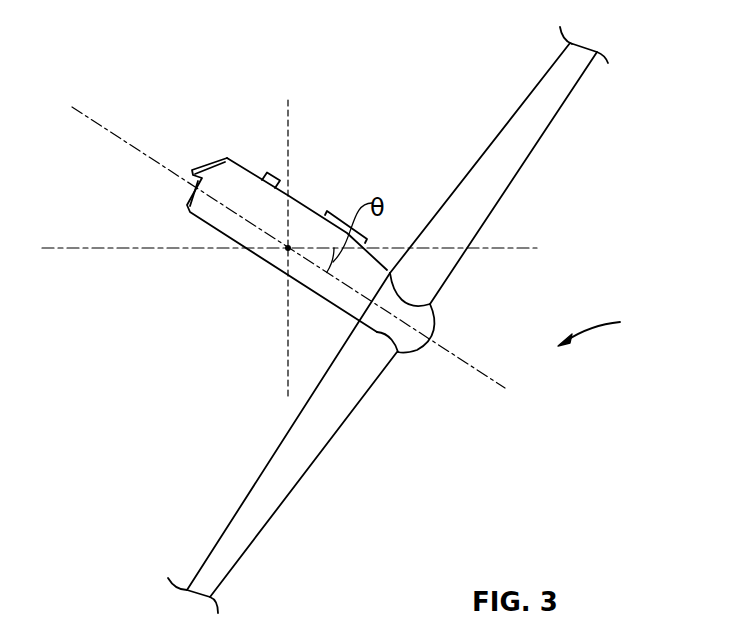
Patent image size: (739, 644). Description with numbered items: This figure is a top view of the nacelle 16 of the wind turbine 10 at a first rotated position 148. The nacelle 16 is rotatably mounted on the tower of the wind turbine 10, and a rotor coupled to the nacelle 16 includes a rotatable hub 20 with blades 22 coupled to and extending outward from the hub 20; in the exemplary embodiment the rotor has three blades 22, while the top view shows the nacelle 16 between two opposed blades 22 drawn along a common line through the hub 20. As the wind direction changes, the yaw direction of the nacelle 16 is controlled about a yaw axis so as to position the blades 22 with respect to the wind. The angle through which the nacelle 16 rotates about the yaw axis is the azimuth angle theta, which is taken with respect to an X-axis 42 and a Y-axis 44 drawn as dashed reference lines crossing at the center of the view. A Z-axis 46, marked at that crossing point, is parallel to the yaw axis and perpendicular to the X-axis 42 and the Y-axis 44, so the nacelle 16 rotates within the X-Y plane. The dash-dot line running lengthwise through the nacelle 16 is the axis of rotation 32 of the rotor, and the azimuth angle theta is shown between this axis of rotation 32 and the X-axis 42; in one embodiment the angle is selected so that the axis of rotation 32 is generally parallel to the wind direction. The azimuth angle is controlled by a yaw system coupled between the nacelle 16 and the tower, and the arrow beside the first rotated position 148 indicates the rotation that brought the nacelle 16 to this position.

The wind turbine 10 is at (333, 320).
The nacelle 16 is at (267, 283).
The hub 20 is at (430, 325).
The blade 22 is at (552, 118).
The axis of rotation 32 is at (476, 370).
The X-axis 42 is at (520, 250).
The Y-axis 44 is at (288, 127).
The Z-axis 46 is at (288, 248).
The first rotated position 148 is at (613, 328).